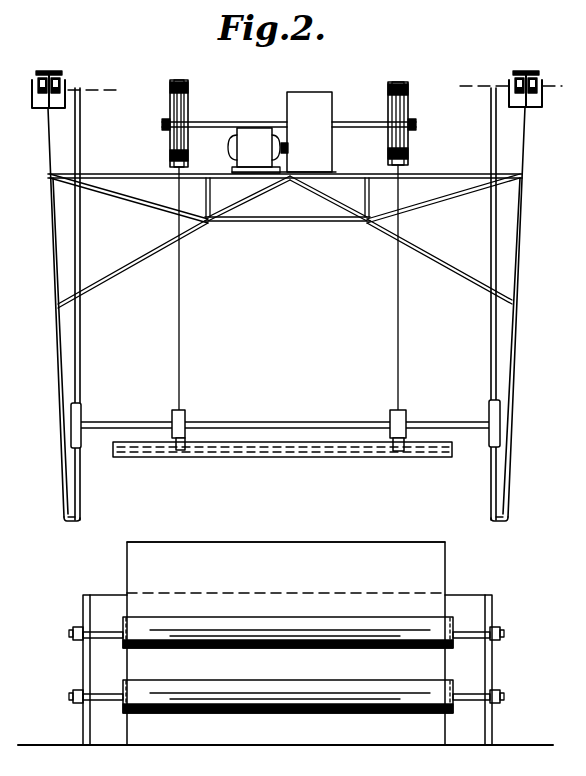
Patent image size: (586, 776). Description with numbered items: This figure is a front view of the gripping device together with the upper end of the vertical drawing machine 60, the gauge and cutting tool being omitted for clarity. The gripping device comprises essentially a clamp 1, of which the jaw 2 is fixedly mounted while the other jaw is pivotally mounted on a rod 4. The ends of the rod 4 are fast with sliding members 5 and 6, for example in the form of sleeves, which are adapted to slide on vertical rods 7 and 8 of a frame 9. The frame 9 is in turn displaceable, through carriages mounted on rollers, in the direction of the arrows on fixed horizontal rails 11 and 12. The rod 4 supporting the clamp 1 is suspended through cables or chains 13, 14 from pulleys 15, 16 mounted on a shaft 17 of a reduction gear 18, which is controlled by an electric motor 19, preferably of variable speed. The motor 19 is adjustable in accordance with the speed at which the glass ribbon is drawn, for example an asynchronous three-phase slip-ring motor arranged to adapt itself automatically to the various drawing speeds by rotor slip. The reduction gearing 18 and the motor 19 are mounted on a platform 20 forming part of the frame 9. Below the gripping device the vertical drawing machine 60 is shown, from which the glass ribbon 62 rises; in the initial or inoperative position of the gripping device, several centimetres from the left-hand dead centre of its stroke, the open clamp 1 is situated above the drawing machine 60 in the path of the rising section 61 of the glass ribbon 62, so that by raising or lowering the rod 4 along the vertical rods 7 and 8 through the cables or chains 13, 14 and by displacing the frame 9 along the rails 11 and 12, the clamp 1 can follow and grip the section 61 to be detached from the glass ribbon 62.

The clamp 1 is at (306, 454).
The jaw 2 is at (180, 450).
The rod 4 is at (260, 422).
The sliding member 5 is at (493, 412).
The sliding member 6 is at (80, 410).
The vertical rod 7 is at (496, 218).
The vertical rod 8 is at (75, 246).
The frame 9 is at (50, 215).
The fixed horizontal rail 11 is at (527, 71).
The fixed horizontal rail 12 is at (53, 71).
The cable or chain 13 is at (396, 297).
The cable or chain 14 is at (181, 298).
The pulley 15 is at (408, 105).
The pulley 16 is at (170, 98).
The shaft 17 is at (222, 122).
The reduction gear 18 is at (310, 110).
The electric motor 19 is at (247, 140).
The platform 20 is at (147, 173).
The vertical drawing machine 60 is at (100, 665).
The section of the glass ribbon 61 is at (265, 540).
The glass ribbon 62 is at (163, 576).